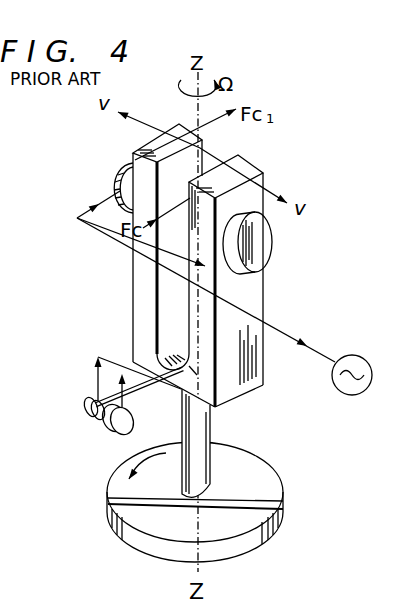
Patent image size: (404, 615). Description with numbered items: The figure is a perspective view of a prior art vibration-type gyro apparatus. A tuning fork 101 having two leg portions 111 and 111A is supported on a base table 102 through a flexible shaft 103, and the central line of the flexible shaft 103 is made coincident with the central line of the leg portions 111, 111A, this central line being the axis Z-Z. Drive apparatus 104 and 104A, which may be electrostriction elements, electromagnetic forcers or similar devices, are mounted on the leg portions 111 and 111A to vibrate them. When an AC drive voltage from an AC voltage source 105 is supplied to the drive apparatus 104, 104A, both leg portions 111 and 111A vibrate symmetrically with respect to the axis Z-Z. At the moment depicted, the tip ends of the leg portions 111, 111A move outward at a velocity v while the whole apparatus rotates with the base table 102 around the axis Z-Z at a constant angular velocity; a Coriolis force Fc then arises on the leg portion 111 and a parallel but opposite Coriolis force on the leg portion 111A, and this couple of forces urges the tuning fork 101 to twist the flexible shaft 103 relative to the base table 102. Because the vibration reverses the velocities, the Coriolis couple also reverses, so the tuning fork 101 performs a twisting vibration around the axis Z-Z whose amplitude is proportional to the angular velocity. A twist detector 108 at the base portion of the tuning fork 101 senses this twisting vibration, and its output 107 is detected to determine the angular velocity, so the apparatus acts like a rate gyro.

The tuning fork 101 is at (182, 265).
The base table 102 is at (108, 506).
The flexible shaft 103 is at (280, 513).
The drive apparatus 104 is at (262, 243).
The drive apparatus 104A is at (117, 173).
The AC voltage source 105 is at (350, 355).
The output 107 is at (181, 390).
The twist detector 108 is at (118, 436).
The leg portion 111 is at (258, 294).
The leg portion 111A is at (140, 284).